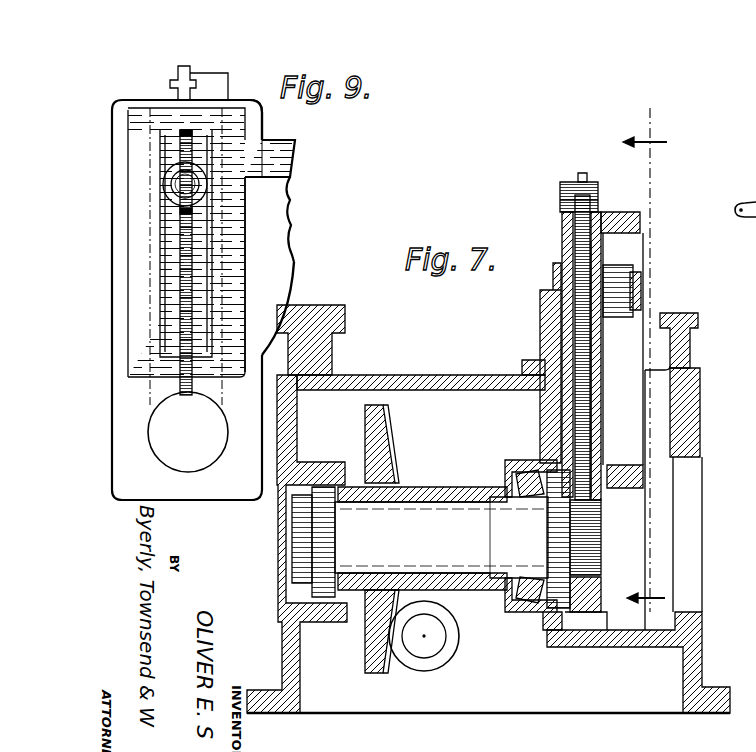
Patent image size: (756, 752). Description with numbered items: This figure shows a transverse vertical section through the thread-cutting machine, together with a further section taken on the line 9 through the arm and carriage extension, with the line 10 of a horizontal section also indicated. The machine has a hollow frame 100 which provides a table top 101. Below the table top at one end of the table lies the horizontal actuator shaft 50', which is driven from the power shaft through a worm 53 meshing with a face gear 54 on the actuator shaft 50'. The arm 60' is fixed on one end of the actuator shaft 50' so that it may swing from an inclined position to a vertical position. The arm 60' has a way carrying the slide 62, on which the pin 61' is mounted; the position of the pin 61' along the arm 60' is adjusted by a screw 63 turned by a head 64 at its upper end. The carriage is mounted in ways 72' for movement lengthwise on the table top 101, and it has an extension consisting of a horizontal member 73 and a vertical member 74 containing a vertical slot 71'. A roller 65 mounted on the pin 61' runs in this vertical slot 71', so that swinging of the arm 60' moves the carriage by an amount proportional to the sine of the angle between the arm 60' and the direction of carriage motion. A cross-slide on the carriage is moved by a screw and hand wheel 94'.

In FIG. 7, the section line 9— 9 is at (645, 367).
In FIG. 7, the section line 10— 10 is at (729, 472).
In FIG. 9, the actuator shaft 50' is at (188, 446).
In FIG. 7, the actuator shaft 50' is at (486, 539).
In FIG. 7, the worm 53 is at (433, 644).
In FIG. 7, the face gear 54 is at (392, 442).
In FIG. 9, the arm 60' is at (185, 301).
In FIG. 7, the arm 60' is at (556, 431).
In FIG. 9, the pin 61' is at (253, 191).
In FIG. 7, the pin 61' is at (649, 289).
In FIG. 9, the slide 62 is at (262, 162).
In FIG. 7, the slide 62 is at (601, 256).
In FIG. 9, the screw 63 is at (192, 262).
In FIG. 7, the screw 63 is at (590, 378).
In FIG. 9, the head 64 is at (182, 68).
In FIG. 7, the head 64 is at (582, 176).
In FIG. 9, the roller 65 is at (200, 196).
In FIG. 7, the roller 65 is at (632, 300).
In FIG. 9, the vertical slot 71' is at (269, 274).
In FIG. 7, the vertical slot 71' is at (669, 349).
In FIG. 7, the ways 72' is at (506, 329).
In FIG. 9, the horizontal member 73 is at (270, 140).
In FIG. 9, the vertical member 74 is at (236, 298).
In FIG. 7, the vertical member 74 is at (640, 215).
In FIG. 7, the hand wheel 94' is at (728, 232).
In FIG. 7, the hollow frame 100 is at (690, 442).
In FIG. 7, the table top 101 is at (455, 375).